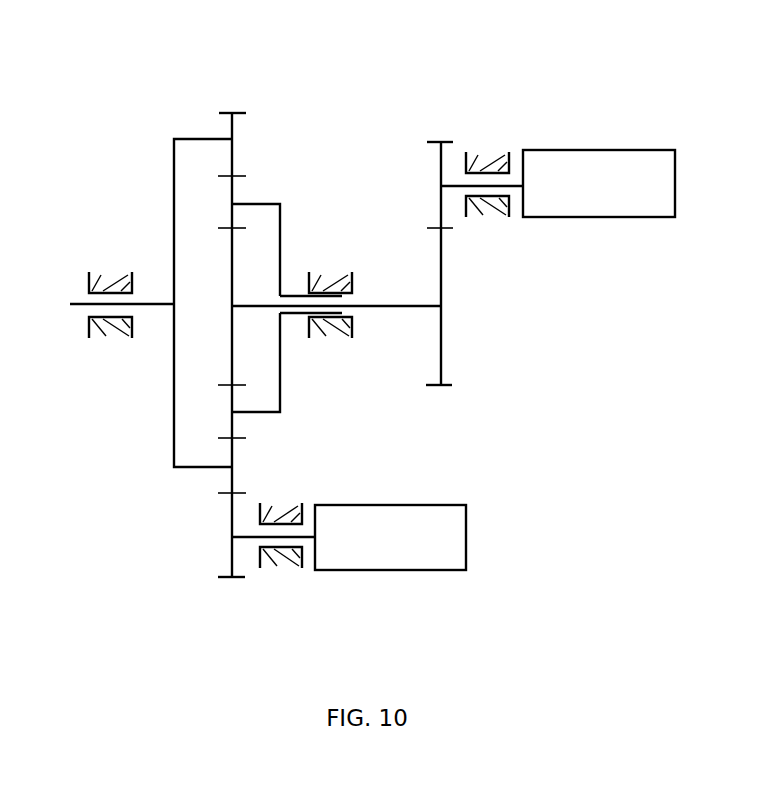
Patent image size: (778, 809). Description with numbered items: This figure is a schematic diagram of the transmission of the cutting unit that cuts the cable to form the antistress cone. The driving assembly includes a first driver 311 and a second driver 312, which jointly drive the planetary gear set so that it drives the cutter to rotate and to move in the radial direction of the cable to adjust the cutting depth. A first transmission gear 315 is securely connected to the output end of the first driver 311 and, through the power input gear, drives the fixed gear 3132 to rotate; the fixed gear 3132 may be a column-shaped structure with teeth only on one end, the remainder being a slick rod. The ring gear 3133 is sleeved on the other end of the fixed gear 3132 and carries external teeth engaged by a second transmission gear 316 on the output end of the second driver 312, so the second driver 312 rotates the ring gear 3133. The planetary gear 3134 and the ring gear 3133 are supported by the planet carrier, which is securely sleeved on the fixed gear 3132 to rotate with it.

The first driver 311 is at (593, 158).
The second driver 312 is at (395, 543).
The first transmission gear 315 is at (441, 140).
The second transmission gear 316 is at (230, 553).
The fixed gear 3132 is at (443, 333).
The ring gear 3133 is at (230, 130).
The planetary gear 3134 is at (233, 187).